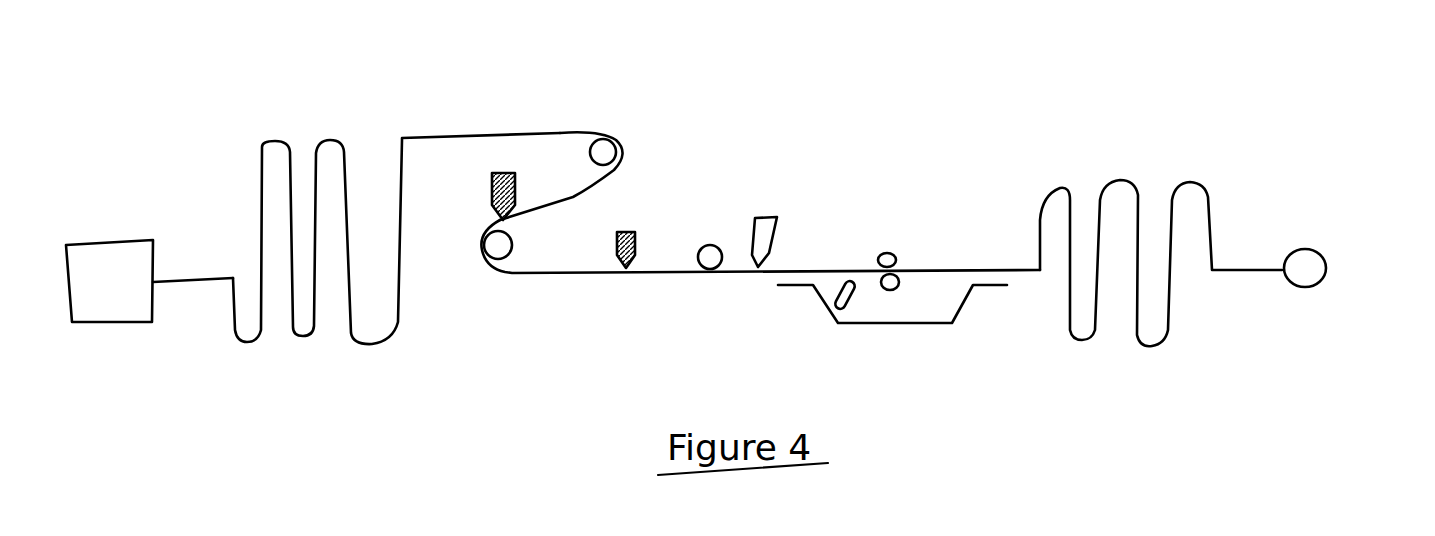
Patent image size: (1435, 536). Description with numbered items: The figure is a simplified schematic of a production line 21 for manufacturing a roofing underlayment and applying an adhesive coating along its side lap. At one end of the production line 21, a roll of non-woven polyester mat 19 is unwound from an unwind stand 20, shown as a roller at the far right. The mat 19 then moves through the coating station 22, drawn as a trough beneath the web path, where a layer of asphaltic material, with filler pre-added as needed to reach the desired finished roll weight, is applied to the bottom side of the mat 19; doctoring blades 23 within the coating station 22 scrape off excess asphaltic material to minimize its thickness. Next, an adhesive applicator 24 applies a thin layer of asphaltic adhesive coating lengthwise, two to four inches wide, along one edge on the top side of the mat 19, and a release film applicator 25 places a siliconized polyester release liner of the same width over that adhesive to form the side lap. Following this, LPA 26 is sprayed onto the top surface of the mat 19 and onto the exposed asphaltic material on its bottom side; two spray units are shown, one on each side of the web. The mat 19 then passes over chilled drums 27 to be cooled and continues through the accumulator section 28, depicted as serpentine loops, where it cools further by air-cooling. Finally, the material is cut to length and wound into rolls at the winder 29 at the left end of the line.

The non-woven polyester mat 19 is at (1147, 160).
The unwind stand 20 is at (1328, 238).
The production line 21 is at (957, 25).
The coating station 22 is at (928, 328).
The doctoring blades 23 is at (866, 285).
The adhesive applicator 24 is at (776, 242).
The release film applicator 25 is at (710, 244).
The LPA 26 is at (570, 213).
The chilled drums 27 is at (580, 176).
The accumulator section 28 is at (396, 220).
The winder 29 is at (115, 332).